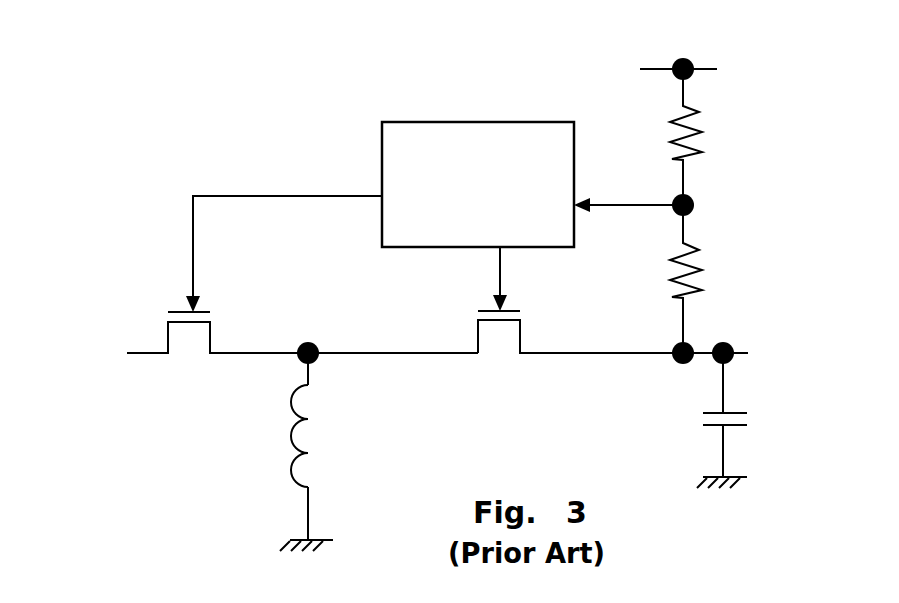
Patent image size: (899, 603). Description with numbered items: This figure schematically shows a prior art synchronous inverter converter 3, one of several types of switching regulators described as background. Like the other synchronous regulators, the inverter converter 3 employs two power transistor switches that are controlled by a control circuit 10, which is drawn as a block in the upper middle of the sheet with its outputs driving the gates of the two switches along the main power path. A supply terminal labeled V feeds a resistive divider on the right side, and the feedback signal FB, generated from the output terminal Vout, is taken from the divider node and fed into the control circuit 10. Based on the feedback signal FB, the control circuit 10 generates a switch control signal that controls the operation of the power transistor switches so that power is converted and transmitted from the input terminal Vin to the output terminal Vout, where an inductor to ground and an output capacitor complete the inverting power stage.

The inverter converter 3 is at (228, 140).
The control circuit 10 is at (465, 219).
The feedback signal FB is at (656, 206).
The supply voltage + V is at (716, 70).
The input terminal Vin is at (122, 355).
The output terminal Vout is at (773, 355).